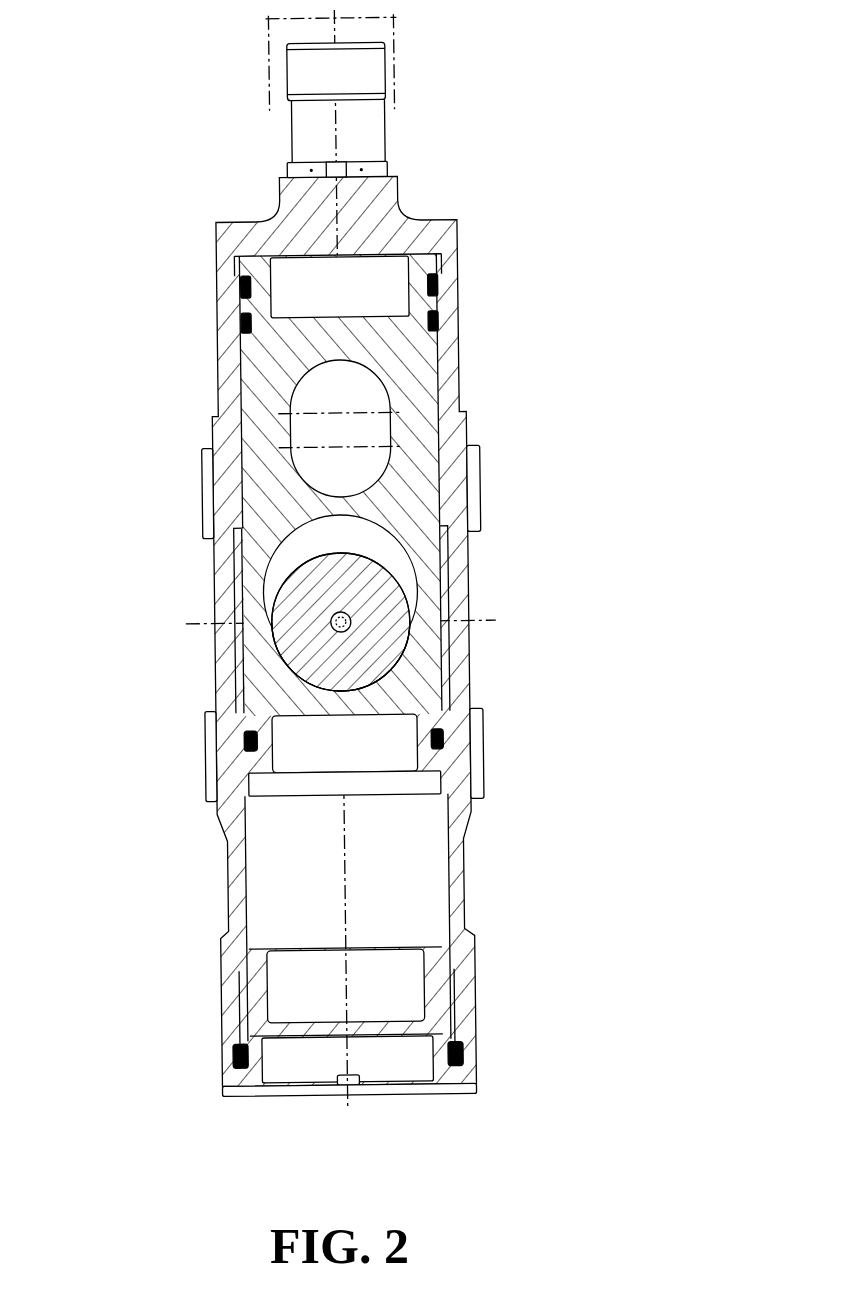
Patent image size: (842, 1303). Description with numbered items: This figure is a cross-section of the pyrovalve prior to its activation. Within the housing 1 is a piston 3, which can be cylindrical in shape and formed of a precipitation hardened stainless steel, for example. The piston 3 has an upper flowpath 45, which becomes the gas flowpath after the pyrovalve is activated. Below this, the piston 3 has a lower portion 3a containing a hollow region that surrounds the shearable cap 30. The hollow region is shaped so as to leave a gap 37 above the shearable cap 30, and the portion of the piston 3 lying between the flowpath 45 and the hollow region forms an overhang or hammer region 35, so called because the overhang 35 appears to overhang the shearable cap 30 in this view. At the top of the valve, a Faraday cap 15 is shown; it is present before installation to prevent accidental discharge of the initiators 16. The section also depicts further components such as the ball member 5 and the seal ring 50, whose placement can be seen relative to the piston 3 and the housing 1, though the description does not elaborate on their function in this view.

The housing 1 is at (462, 280).
The piston 3 is at (262, 354).
The lower portion 3a is at (250, 600).
The ball 5 is at (362, 614).
The Faraday cap 15 is at (398, 60).
The initiators 16 is at (388, 136).
The shearable cap 30 is at (375, 658).
The overhang or hammer region 35 is at (382, 507).
The gap 37 is at (393, 551).
The upper flowpath 45 is at (362, 408).
The seal ring 50 is at (250, 718).